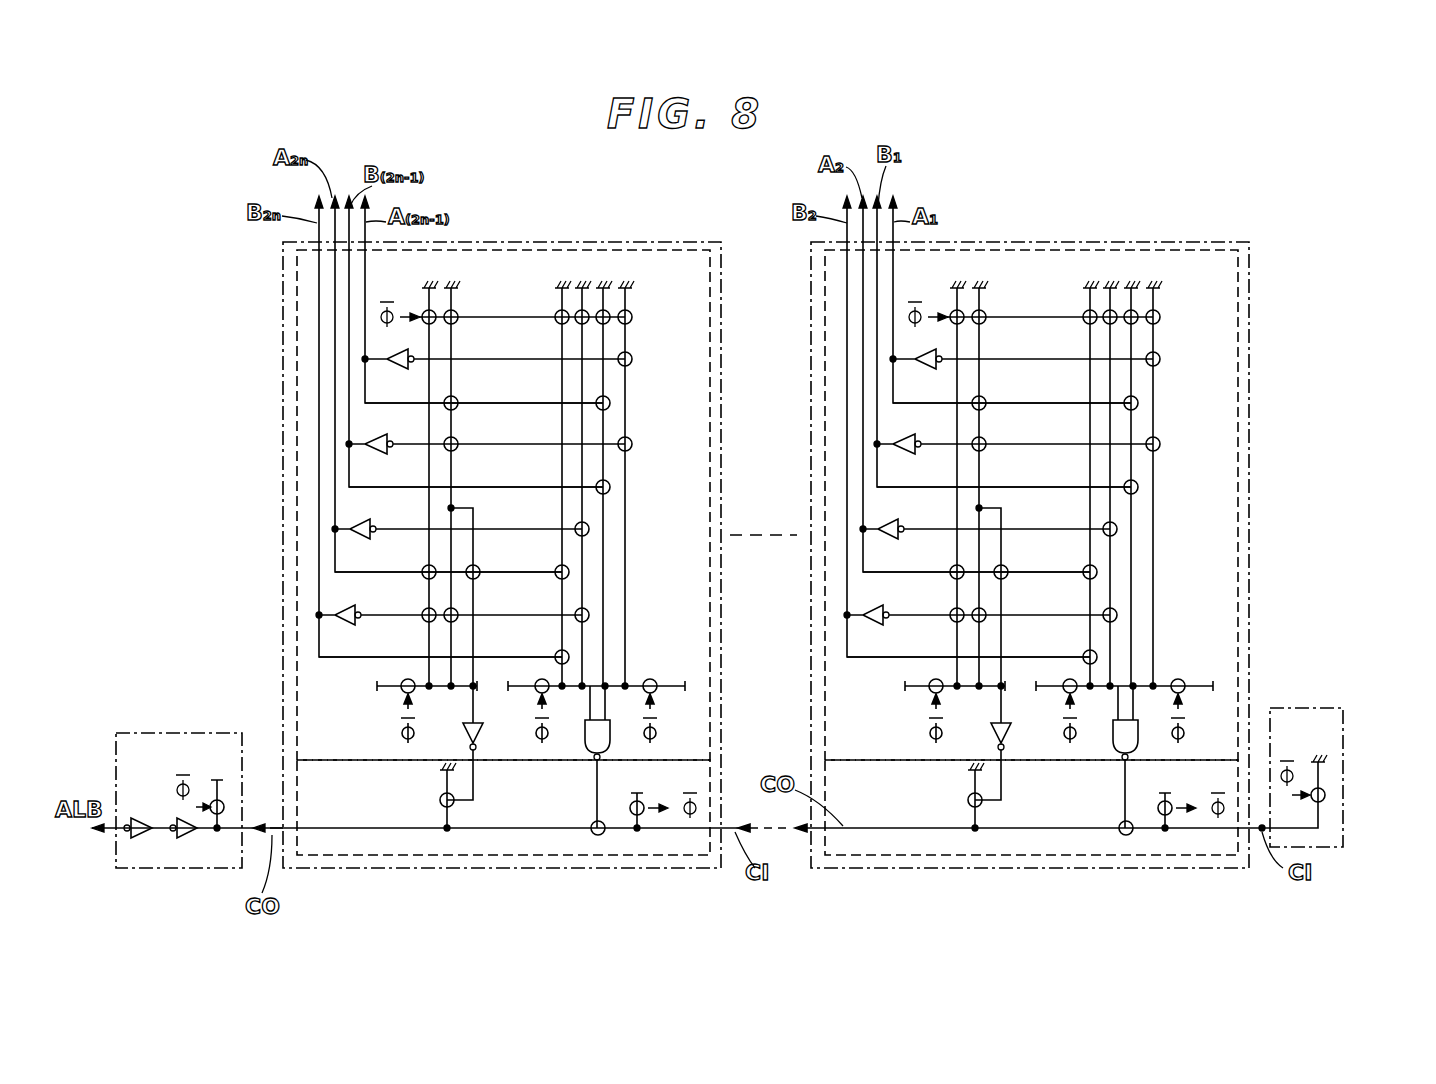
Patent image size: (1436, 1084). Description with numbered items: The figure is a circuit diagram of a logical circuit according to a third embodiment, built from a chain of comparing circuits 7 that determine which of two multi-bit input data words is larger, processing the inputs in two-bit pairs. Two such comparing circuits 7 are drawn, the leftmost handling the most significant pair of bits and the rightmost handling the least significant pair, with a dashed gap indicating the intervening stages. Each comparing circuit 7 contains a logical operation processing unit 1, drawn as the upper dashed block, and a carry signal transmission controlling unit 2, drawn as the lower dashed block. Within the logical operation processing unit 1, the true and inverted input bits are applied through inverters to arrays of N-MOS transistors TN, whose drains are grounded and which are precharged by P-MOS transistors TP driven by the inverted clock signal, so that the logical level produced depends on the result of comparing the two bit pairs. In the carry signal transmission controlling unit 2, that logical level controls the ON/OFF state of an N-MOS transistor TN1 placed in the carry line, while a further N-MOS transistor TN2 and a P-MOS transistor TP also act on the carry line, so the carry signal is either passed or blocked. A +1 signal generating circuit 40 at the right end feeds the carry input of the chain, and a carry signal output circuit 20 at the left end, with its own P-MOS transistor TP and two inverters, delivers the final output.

The comparing circuit 7 is at (505, 241).
The logical operation processing unit 1 is at (564, 260).
The carry signal transmission controlling unit 2 is at (530, 845).
The carry signal output circuit 20 is at (160, 733).
The +1 signal generating circuit 40 is at (1303, 707).
The N-MOS transistor TN is at (425, 312).
The P-MOS transistor TP is at (402, 690).
The N-MOS transistor TN1 is at (593, 822).
The N-MOS transistor TN2 is at (440, 800).